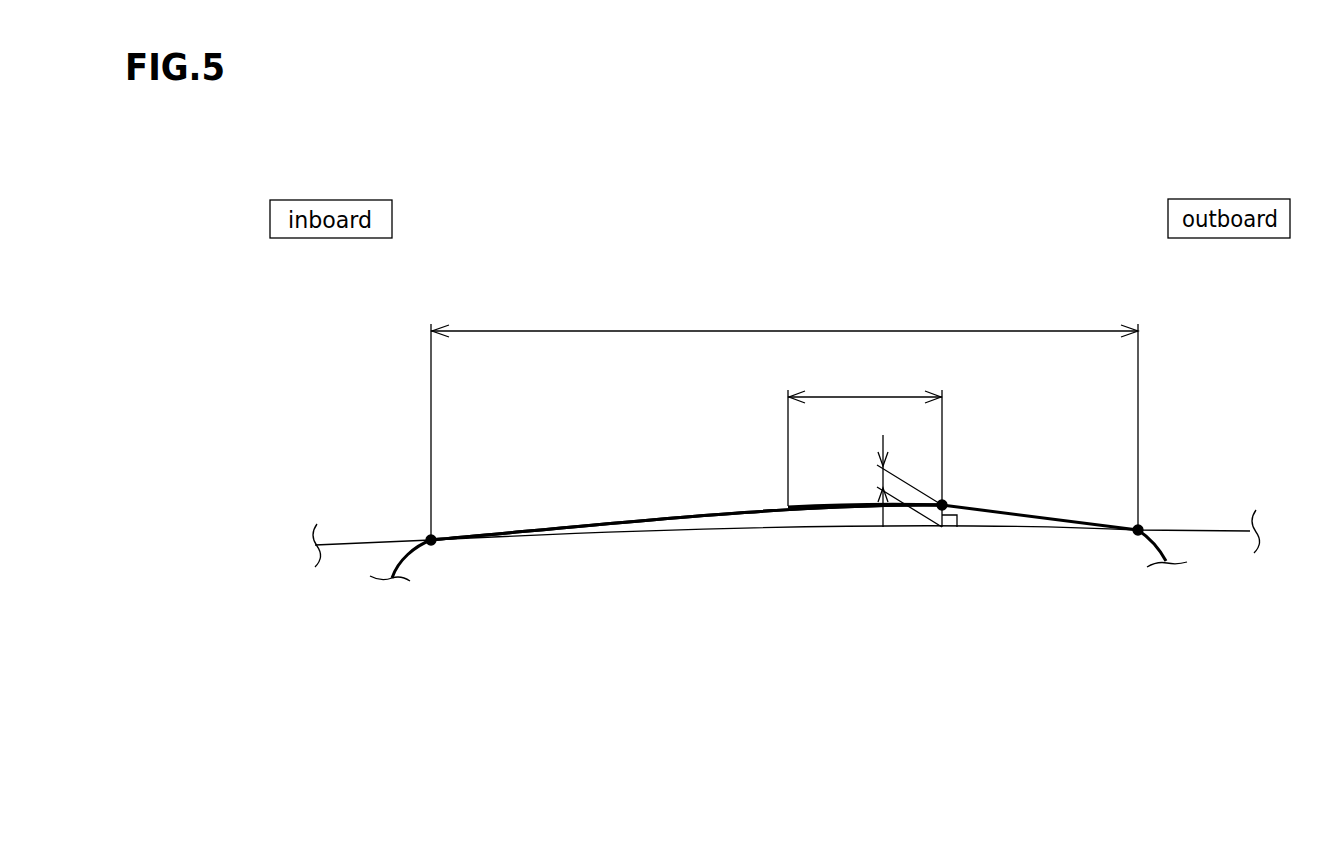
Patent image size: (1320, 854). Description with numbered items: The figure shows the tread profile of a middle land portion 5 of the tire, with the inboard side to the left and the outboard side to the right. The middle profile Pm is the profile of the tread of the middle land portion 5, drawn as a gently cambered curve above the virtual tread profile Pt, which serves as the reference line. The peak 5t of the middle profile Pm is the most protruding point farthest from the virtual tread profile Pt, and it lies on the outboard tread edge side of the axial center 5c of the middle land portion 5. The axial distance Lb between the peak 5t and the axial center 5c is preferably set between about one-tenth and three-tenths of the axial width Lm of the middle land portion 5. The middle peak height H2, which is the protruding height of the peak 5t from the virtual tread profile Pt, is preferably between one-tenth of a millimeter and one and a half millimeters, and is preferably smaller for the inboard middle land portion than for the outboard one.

The middle land portion 5 is at (1162, 388).
The axial center of the middle land portion 5c is at (778, 507).
The peak of the middle profile 5t is at (942, 505).
The middle profile Pm is at (607, 523).
The virtual tread profile Pt is at (694, 529).
The middle peak height H2 is at (883, 488).
The axial width of the middle land portion Lm is at (784, 418).
The axial distance between the peak and the axial center Lb is at (865, 446).